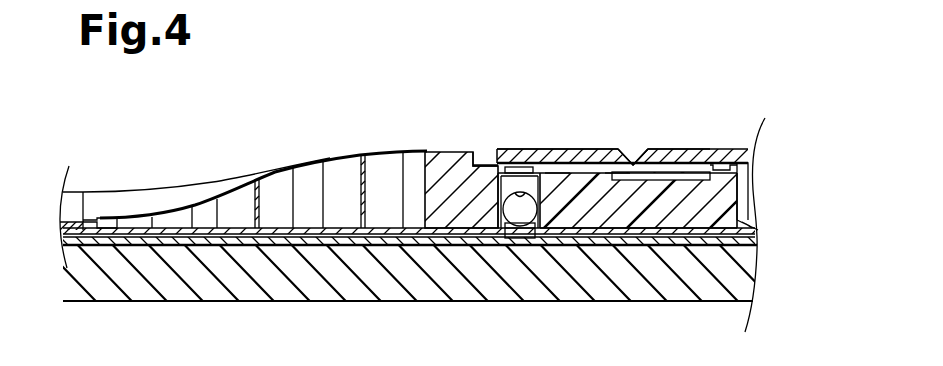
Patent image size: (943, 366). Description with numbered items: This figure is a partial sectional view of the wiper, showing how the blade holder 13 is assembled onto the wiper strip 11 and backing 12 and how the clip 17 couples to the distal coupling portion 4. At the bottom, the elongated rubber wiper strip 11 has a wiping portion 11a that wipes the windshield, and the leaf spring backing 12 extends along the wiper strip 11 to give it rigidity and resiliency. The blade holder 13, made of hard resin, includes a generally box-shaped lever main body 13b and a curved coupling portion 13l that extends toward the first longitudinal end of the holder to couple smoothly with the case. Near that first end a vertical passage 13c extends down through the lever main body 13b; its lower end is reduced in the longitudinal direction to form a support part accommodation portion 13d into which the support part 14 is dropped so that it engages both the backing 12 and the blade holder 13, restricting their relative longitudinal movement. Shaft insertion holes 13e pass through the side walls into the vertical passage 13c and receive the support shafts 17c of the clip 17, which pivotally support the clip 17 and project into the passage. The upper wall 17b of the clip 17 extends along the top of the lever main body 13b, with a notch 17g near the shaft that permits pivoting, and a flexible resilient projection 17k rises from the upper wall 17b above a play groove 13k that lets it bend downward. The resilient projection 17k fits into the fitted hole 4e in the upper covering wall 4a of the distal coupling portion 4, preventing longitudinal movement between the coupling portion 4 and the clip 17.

The distal coupling portion 4 is at (730, 162).
The upper covering wall 4a is at (557, 152).
The fitted hole 4e is at (620, 163).
The wiper strip 11 is at (218, 290).
The wiping portion 11a is at (388, 302).
The backing 12 is at (305, 246).
The blade holder 13 is at (440, 151).
The lever main body 13b is at (573, 163).
The vertical passage 13c is at (496, 137).
The support part accommodation portion 13d is at (527, 244).
The shaft insertion hole 13e is at (513, 192).
The play groove 13k is at (633, 163).
The curved coupling portion 13l is at (158, 197).
The support part 14 is at (517, 234).
The clip 17 is at (700, 162).
The upper wall 17b is at (670, 162).
The support shaft 17c is at (500, 207).
The notch 17g is at (523, 162).
The resilient projection 17k is at (645, 162).